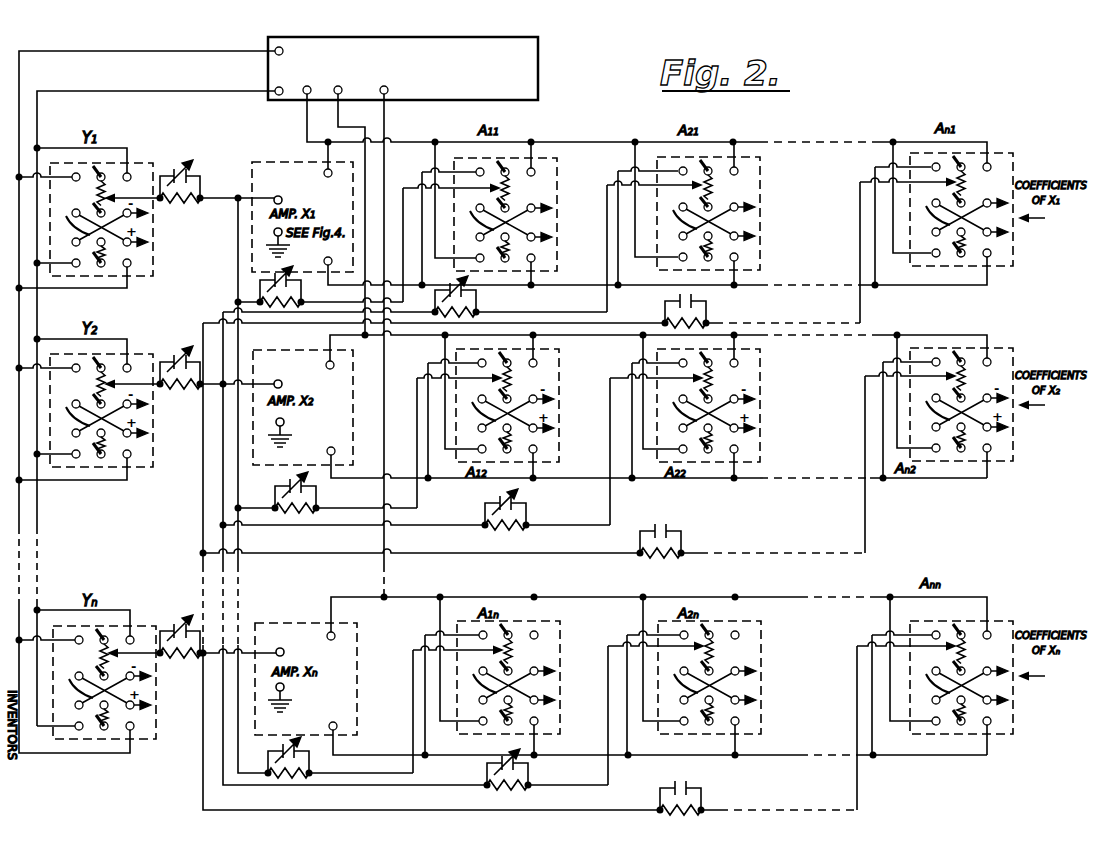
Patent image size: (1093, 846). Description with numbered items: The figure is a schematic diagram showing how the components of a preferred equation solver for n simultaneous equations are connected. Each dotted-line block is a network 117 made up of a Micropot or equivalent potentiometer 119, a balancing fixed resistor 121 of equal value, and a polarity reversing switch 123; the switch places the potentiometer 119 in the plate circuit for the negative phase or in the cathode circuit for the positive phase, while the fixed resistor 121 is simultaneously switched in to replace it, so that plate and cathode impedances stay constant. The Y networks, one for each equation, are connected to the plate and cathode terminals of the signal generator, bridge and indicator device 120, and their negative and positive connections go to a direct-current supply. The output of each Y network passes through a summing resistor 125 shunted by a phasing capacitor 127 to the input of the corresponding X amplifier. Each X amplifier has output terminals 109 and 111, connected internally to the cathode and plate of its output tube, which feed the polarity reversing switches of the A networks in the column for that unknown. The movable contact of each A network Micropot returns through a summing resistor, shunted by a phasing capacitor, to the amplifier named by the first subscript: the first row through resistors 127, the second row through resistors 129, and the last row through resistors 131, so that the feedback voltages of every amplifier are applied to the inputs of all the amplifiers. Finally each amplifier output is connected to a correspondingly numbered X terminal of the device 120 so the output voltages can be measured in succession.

The output terminal 109 is at (322, 177).
The output terminal 111 is at (324, 263).
The network 117 is at (152, 258).
The potentiometer 119 is at (108, 190).
The signal generator, bridge and indicator device 120 is at (540, 73).
The fixed resistor 121 is at (114, 247).
The polarity reversing switch 123 is at (92, 205).
The summing resistor 125 is at (182, 203).
The phasing capacitor 127 is at (178, 168).
The summing resistor 129 is at (478, 312).
The summing resistor 131 is at (706, 323).